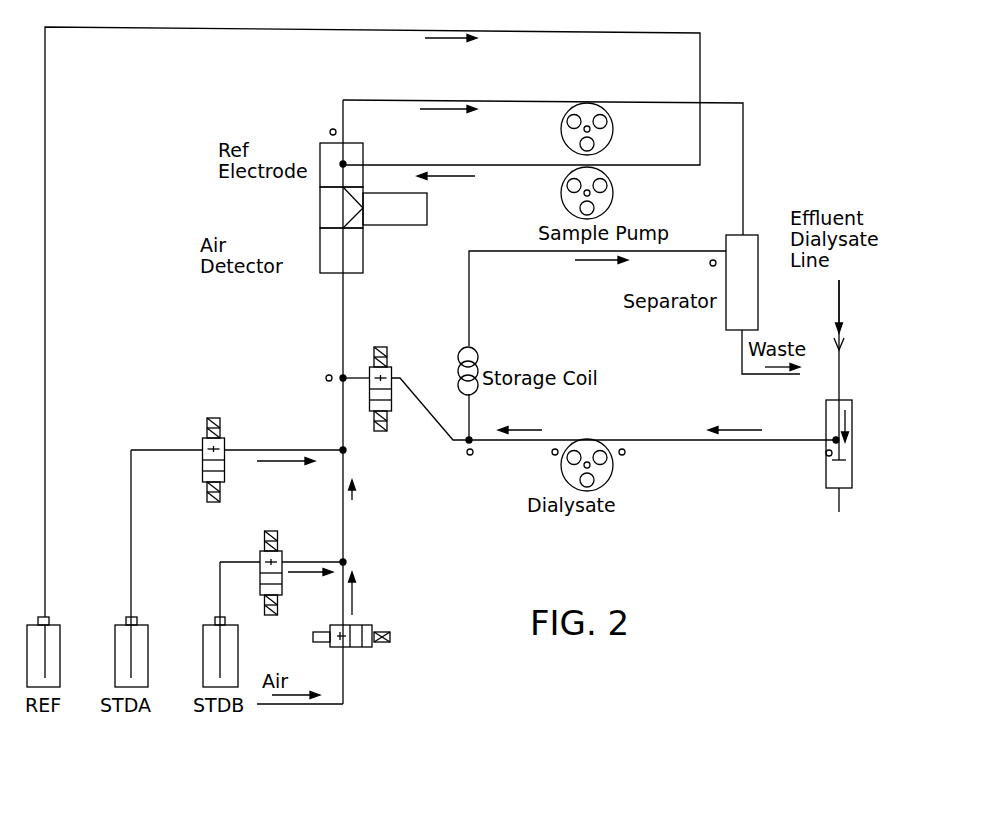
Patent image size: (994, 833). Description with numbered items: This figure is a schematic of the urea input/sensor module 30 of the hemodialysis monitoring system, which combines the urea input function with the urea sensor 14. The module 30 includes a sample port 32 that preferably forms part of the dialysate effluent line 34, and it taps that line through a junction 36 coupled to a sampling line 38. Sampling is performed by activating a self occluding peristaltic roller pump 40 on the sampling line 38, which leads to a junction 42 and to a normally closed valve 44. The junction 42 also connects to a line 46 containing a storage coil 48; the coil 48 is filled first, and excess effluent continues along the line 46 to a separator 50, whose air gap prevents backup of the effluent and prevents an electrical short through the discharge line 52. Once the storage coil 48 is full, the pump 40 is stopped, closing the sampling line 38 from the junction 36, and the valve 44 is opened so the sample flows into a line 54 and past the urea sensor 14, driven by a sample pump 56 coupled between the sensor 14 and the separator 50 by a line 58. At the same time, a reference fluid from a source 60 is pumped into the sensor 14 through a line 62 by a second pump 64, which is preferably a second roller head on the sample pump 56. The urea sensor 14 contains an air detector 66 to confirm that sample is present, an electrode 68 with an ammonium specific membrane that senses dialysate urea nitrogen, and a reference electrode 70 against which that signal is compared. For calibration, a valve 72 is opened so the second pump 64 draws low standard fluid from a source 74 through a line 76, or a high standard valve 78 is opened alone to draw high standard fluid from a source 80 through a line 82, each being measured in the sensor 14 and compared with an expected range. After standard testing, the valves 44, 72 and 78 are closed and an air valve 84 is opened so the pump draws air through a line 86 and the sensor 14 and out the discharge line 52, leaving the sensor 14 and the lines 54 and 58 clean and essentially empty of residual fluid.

The urea sensor 14 is at (308, 208).
The urea input/sensor module 30 is at (476, 534).
The sample port 32 is at (818, 482).
The dialysate effluent line 34 is at (838, 372).
The junction 36 is at (834, 441).
The sampling line 38 is at (690, 444).
The roller pump 40 is at (610, 487).
The junction 42 is at (470, 443).
The normally closed valve 44 is at (392, 410).
The line 46 is at (528, 252).
The storage coil 48 is at (480, 352).
The separator 50 is at (738, 232).
The discharge line 52 is at (768, 374).
The line 54 is at (343, 303).
The sample pump 56 is at (613, 126).
The line 58 is at (525, 100).
The reference fluid source 60 is at (60, 625).
The line 62 is at (133, 28).
The second pump 64 is at (610, 200).
The air detector 66 is at (328, 265).
The electrode 68 is at (427, 210).
The reference electrode 70 is at (320, 143).
The valve 72 is at (224, 440).
The low standard source 74 is at (148, 625).
The line 76 is at (168, 450).
The high standard valve 78 is at (282, 553).
The high standard source 80 is at (238, 625).
The line 82 is at (220, 560).
The air valve 84 is at (372, 648).
The line 86 is at (300, 705).